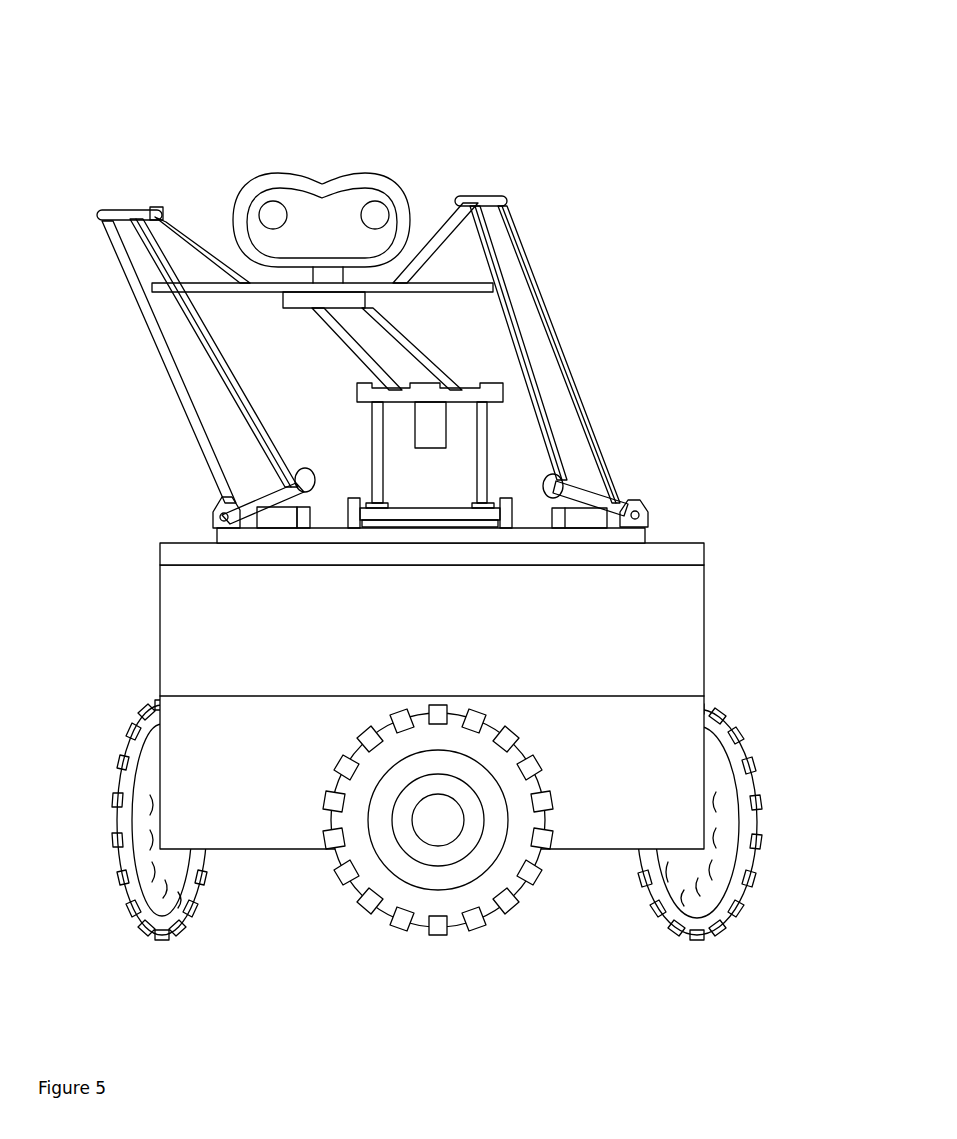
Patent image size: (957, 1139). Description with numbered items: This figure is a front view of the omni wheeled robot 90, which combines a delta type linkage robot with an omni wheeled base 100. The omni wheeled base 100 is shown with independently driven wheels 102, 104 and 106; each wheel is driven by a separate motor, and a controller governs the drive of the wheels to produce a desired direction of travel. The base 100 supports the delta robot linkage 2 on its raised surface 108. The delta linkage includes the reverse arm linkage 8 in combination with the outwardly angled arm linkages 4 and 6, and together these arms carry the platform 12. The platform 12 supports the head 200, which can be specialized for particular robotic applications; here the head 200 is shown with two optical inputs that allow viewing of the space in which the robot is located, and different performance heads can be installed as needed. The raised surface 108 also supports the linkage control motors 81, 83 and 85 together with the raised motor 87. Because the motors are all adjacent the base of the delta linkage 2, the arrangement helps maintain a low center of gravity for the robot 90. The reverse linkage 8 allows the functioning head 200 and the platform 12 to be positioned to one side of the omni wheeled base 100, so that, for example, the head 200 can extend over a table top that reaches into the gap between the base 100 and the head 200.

The head 200 is at (390, 180).
The platform 12 is at (465, 288).
The reverse arm linkage 8 is at (442, 353).
The delta robot linkage 2 is at (598, 353).
The outwardly angled arm linkage 4 is at (593, 450).
The outwardly angled arm linkage 6 is at (160, 369).
The omni wheeled robot 90 is at (164, 493).
The raised motor 87 is at (465, 437).
The linkage control motor 83 is at (223, 528).
The linkage control motor 85 is at (593, 527).
The linkage control motor 81 is at (427, 513).
The raised surface 108 is at (706, 553).
The omni wheeled base 100 is at (725, 655).
The wheel 102 is at (427, 908).
The wheel 104 is at (125, 880).
The wheel 106 is at (743, 872).